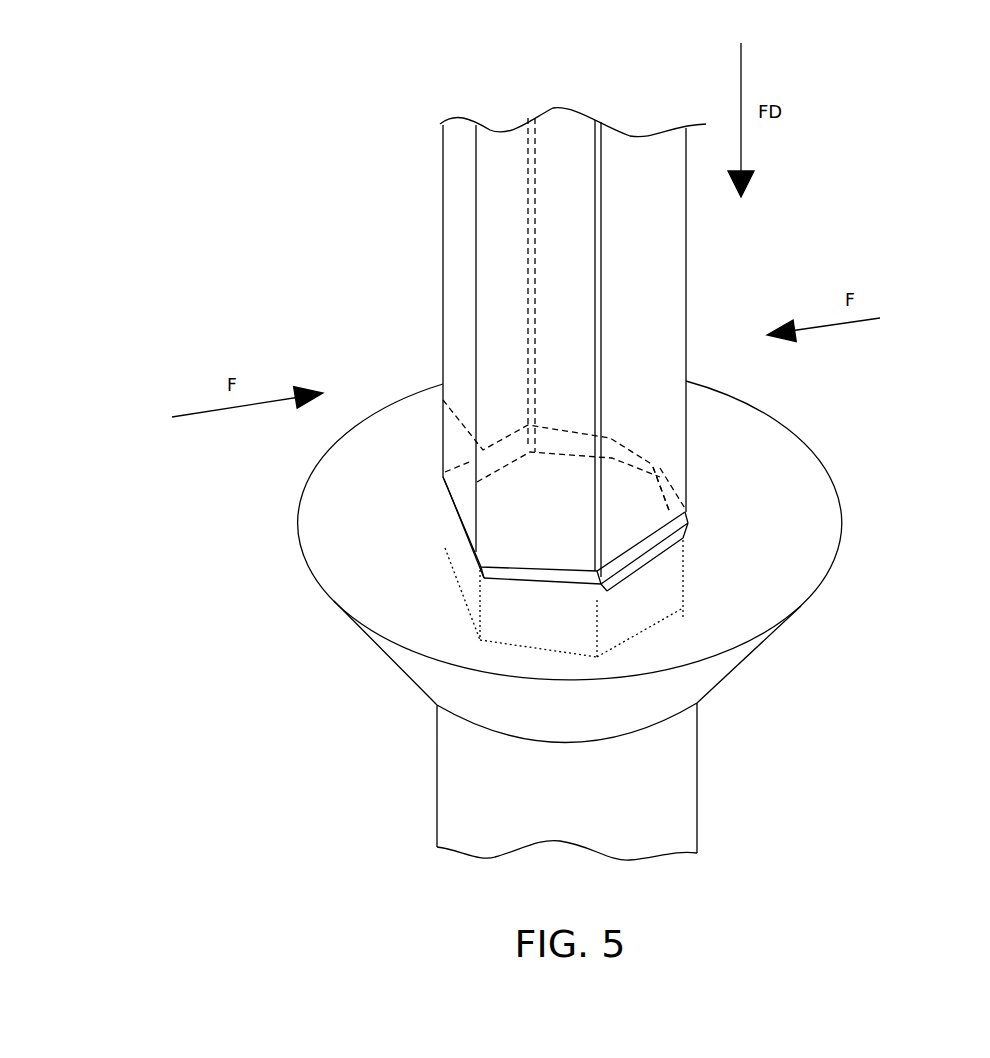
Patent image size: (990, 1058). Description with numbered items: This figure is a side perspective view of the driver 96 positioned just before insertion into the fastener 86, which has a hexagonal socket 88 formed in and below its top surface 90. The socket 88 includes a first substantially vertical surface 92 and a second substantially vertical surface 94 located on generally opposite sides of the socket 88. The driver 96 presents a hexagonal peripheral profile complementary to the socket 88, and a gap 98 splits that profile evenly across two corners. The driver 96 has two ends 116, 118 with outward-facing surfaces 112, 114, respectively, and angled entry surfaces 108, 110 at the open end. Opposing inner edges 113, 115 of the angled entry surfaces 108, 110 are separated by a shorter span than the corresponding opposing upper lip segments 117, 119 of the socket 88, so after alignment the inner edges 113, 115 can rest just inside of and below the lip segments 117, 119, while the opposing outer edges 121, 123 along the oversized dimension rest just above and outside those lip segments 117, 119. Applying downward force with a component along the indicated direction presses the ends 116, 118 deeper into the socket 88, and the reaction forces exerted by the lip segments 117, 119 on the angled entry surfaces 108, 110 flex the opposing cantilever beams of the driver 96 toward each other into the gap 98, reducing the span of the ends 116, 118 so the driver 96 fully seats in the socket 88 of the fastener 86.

The fastener 86 is at (355, 688).
The hexagonal socket 88 is at (500, 590).
The top surface 90 is at (352, 513).
The first substantially vertical surface 92 is at (668, 540).
The second substantially vertical surface 94 is at (443, 400).
The driver 96 is at (297, 190).
The gap 98 is at (594, 283).
The angled entry surface 108 is at (650, 572).
The angled entry surface 110 is at (537, 580).
The outward-facing surface 112 is at (665, 325).
The inner edge 113 is at (690, 458).
The outward-facing surface 114 is at (443, 205).
The inner edge 115 is at (457, 520).
The end 116 is at (722, 248).
The upper lip segment 117 is at (686, 513).
The end 118 is at (395, 315).
The upper lip segment 119 is at (474, 551).
The outer edge 121 is at (695, 490).
The outer edge 123 is at (455, 487).